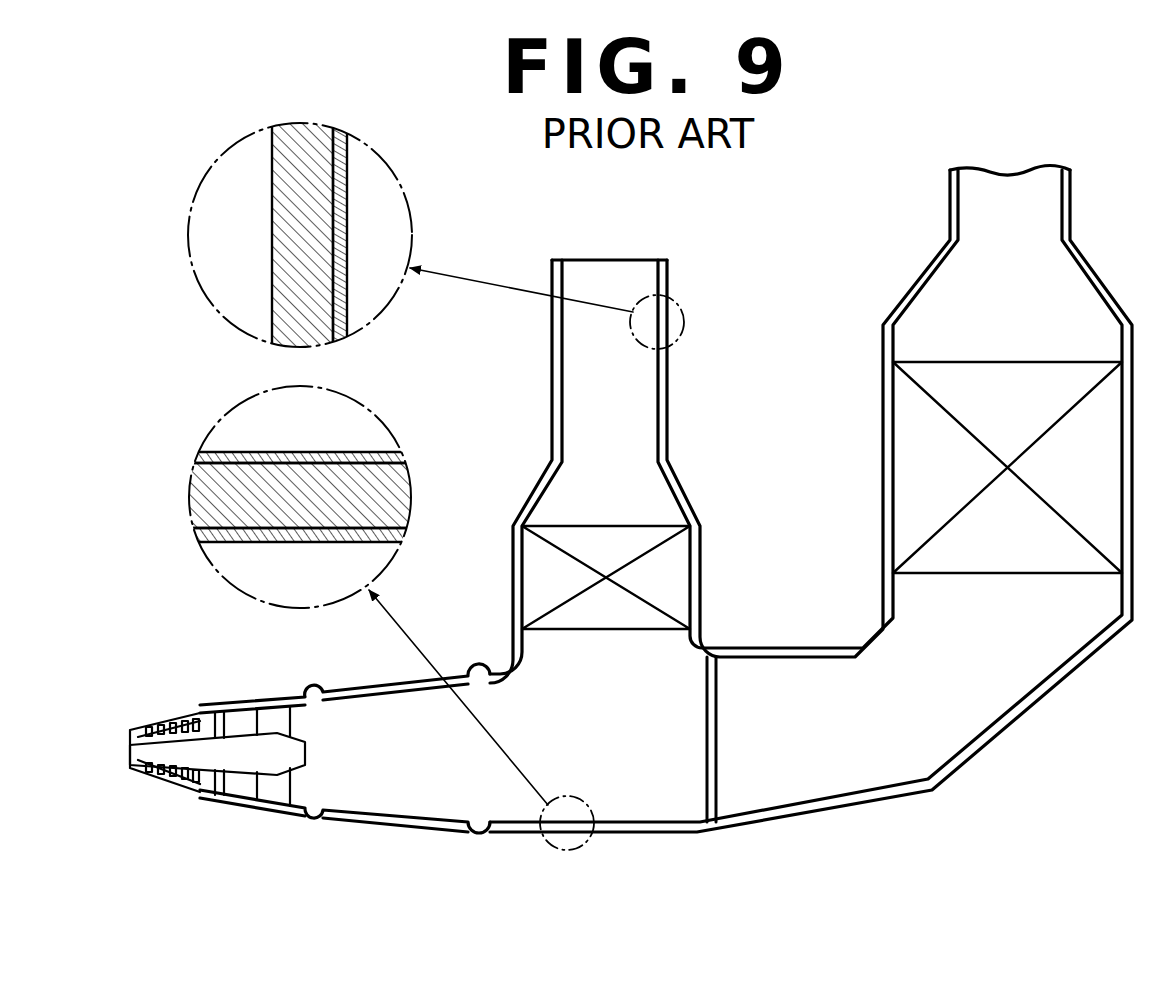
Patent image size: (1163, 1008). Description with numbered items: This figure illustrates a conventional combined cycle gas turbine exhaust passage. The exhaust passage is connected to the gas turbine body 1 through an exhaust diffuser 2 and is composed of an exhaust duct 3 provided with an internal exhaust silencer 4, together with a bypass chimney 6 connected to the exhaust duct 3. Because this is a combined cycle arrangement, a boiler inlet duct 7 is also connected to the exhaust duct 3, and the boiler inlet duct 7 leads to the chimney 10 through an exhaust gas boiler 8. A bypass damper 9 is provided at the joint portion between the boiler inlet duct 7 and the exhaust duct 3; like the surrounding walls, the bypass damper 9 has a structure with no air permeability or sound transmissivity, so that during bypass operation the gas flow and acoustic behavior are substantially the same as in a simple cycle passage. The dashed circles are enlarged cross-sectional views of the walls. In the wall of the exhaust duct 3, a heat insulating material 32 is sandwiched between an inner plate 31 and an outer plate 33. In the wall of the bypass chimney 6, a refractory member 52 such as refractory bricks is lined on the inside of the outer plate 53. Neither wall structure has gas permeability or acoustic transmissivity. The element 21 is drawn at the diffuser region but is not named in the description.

The gas turbine body 1 is at (198, 645).
The exhaust diffuser 2 is at (305, 645).
The exhaust duct 3 is at (306, 663).
The exhaust silencer 4 is at (594, 610).
The bypass chimney 6 is at (545, 260).
The boiler inlet duct 7 is at (849, 604).
The exhaust gas boiler 8 is at (853, 243).
The bypass damper 9 is at (716, 735).
The chimney 10 is at (925, 242).
The nozzle struts 21 is at (268, 790).
The inner plate 31 is at (218, 453).
The heat insulating material 32 is at (212, 488).
The outer plate 33 is at (215, 536).
The refractory member 52 is at (285, 150).
The outer plate 53 is at (340, 186).